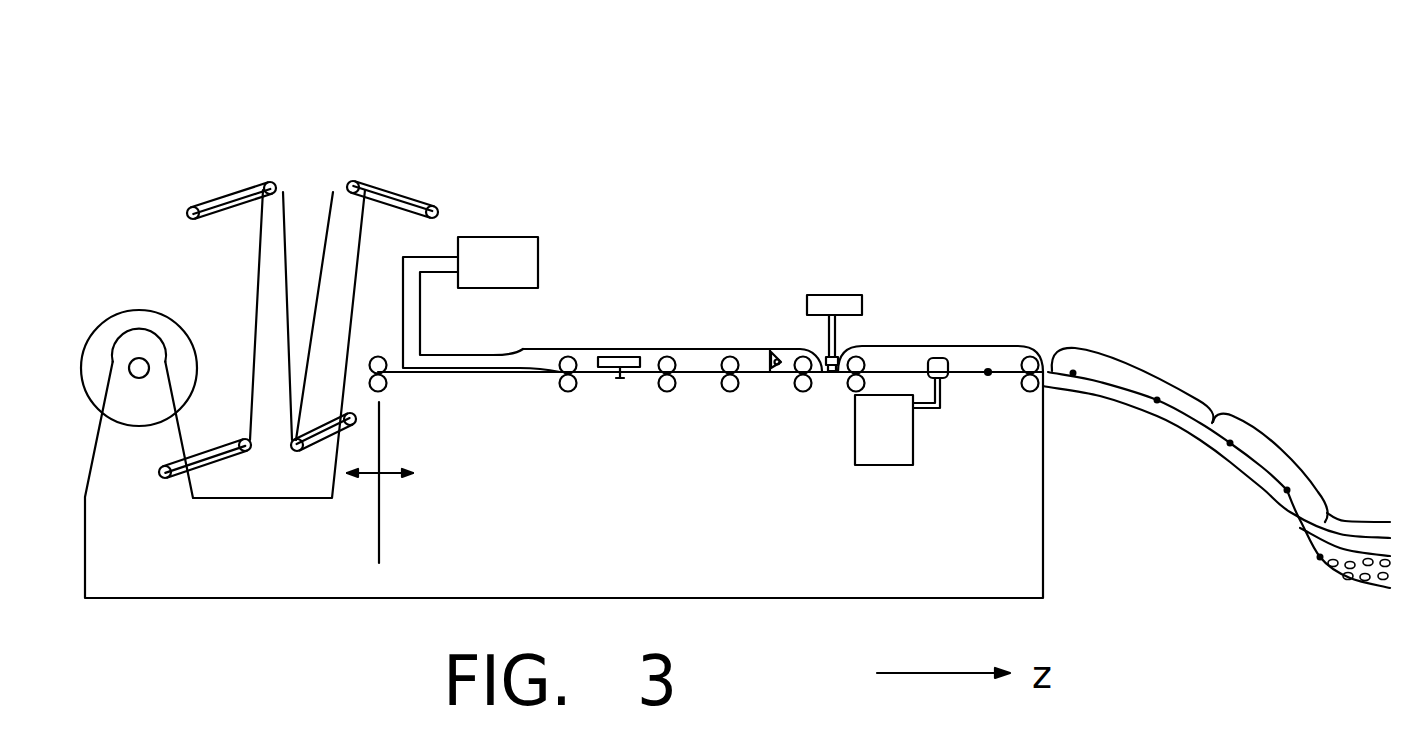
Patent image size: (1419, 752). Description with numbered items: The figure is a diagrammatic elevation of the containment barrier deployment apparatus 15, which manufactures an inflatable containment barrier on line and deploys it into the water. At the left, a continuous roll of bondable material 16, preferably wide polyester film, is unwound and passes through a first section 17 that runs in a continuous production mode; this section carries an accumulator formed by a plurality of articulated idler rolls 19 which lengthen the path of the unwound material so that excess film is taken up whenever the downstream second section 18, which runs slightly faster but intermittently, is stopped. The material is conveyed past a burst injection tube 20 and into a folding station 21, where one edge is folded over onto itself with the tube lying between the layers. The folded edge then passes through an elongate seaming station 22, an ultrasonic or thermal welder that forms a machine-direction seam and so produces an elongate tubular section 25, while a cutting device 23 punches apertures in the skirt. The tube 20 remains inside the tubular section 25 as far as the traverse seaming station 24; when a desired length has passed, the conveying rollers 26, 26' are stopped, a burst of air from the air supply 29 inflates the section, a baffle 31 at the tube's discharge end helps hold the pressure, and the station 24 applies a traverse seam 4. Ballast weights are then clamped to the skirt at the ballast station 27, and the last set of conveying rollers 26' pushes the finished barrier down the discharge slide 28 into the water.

The traverse seam 4 is at (1213, 422).
The containment barrier deployment apparatus 15 is at (310, 580).
The continuous roll of bondable material 16 is at (139, 325).
The first section 17 is at (369, 509).
The second section 18 is at (409, 482).
The articulated idler rolls 19 is at (353, 180).
The burst injection tube 20 is at (412, 345).
The folding station 21 is at (498, 353).
The elongate seaming station 22 is at (627, 357).
The cutting device 23 is at (730, 392).
The traverse seaming station 24 is at (832, 295).
The elongate tubular section 25 is at (700, 360).
The conveying rollers 26 is at (507, 409).
The last set of conveying rollers 26' is at (990, 422).
The ballast station 27 is at (882, 465).
The discharge slide 28 is at (1173, 428).
The air supply 29 is at (523, 273).
The baffle 31 is at (779, 355).